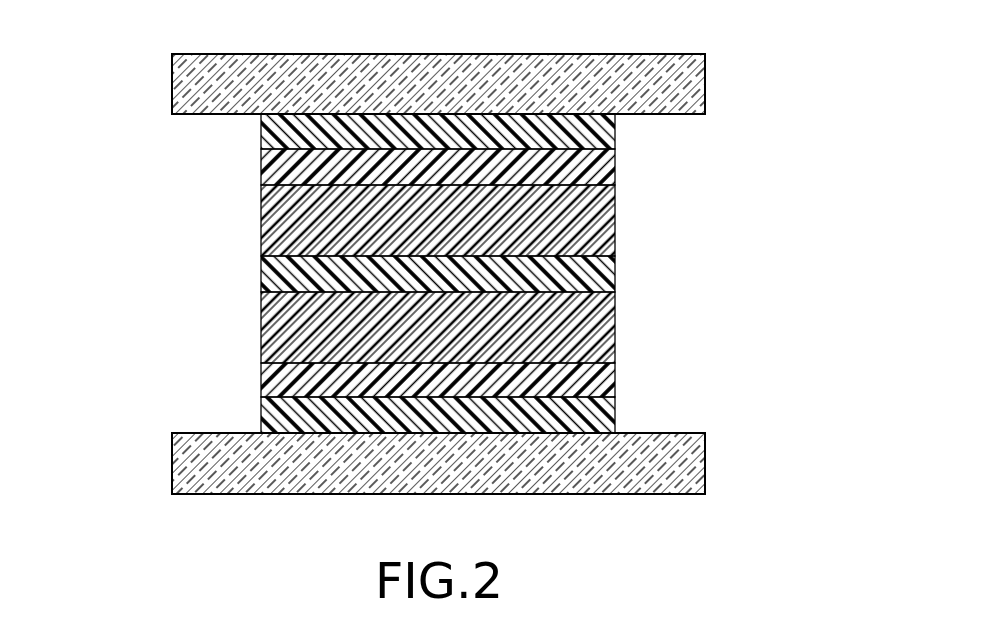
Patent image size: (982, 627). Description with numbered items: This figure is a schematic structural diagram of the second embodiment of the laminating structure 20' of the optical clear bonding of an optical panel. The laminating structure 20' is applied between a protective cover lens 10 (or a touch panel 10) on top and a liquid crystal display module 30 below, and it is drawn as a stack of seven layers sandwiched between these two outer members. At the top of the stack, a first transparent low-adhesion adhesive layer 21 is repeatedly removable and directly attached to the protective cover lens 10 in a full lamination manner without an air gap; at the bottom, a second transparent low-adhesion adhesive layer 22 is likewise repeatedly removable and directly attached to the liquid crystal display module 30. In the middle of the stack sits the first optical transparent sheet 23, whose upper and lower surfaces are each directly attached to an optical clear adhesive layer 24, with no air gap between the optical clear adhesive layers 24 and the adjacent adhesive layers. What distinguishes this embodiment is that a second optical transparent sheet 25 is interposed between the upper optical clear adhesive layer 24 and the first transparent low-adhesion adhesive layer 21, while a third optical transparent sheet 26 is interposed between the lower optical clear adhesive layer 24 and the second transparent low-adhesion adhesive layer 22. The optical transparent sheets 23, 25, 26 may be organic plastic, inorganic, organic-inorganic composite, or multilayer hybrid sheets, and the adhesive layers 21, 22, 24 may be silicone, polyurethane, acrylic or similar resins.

The protective cover lens 10 is at (692, 85).
The liquid crystal display module 30 is at (693, 456).
The laminating structure 20' is at (388, 273).
The first transparent low-adhesion adhesive layer 21 is at (603, 130).
The second transparent low-adhesion adhesive layer 22 is at (605, 412).
The first optical transparent sheet 23 is at (605, 273).
The optical clear adhesive layer 24 is at (270, 212).
The second optical transparent sheet 25 is at (605, 160).
The third optical transparent sheet 26 is at (603, 380).